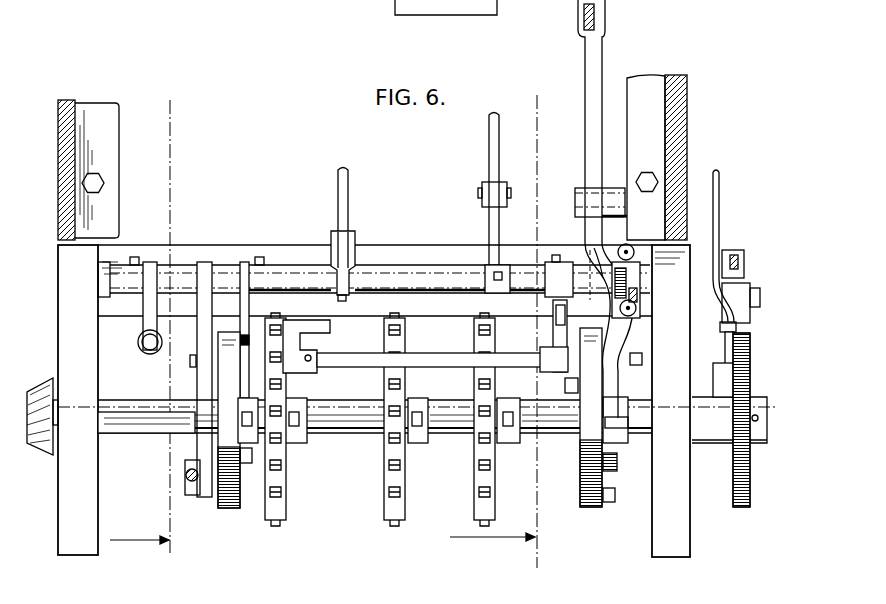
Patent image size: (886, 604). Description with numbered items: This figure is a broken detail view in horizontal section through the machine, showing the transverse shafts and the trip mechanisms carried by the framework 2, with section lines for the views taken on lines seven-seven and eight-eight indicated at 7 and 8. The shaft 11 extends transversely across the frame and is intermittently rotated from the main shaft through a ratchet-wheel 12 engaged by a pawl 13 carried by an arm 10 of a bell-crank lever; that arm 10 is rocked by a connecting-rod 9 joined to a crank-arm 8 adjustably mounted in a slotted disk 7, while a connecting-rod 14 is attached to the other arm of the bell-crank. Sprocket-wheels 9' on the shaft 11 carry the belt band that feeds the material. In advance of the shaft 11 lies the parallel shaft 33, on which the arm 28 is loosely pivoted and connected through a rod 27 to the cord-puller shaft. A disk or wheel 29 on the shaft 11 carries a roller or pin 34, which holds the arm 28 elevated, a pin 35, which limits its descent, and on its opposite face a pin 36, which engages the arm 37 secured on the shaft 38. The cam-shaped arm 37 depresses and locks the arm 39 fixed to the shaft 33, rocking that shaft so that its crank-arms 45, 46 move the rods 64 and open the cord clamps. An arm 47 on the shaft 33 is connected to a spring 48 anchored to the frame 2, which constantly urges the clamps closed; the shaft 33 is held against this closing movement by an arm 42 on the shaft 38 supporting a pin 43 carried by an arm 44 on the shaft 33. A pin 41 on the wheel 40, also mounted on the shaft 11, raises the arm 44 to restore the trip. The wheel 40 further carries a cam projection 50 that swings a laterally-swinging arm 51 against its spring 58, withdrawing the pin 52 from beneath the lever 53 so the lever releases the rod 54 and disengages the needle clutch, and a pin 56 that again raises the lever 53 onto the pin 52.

The framework 2 is at (403, 316).
The disk 7 is at (495, 331).
The crank-arm 8 is at (142, 324).
The connecting-rod 9 is at (742, 253).
The sprocket-wheels 9' is at (380, 419).
The arm of bell-crank lever 10 is at (721, 306).
The shaft 11 is at (397, 416).
The ratchet-wheel 12 is at (754, 420).
The pawl 13 is at (748, 308).
The connecting-rod 14 is at (728, 244).
The rod 27 is at (187, 491).
The arm 28 is at (195, 379).
The disk or wheel 29 is at (223, 437).
The shaft 33 is at (374, 274).
The roller or pin 34 is at (146, 436).
The pin or projection 35 is at (168, 372).
The pin or projection 36 is at (254, 498).
The arm 37 is at (311, 354).
The shaft 38 is at (431, 370).
The arm 39 is at (267, 330).
The wheel 40 is at (575, 421).
The pin or projection 41 is at (559, 389).
The arm 42 is at (536, 336).
The pin 43 is at (516, 334).
The arm 44 is at (544, 284).
The crank-arm 45 is at (480, 256).
The crank-arm 46 is at (361, 262).
The arm 47 is at (131, 306).
The spring 48 is at (137, 353).
The cam projection 50 is at (611, 508).
The laterally-swinging arm 51 is at (641, 281).
The pin 52 is at (578, 260).
The lever 53 is at (595, 214).
The rod 54 is at (625, 17).
The pin or projection 56 is at (618, 474).
The spring 58 is at (648, 326).
The rods 64 is at (424, 190).